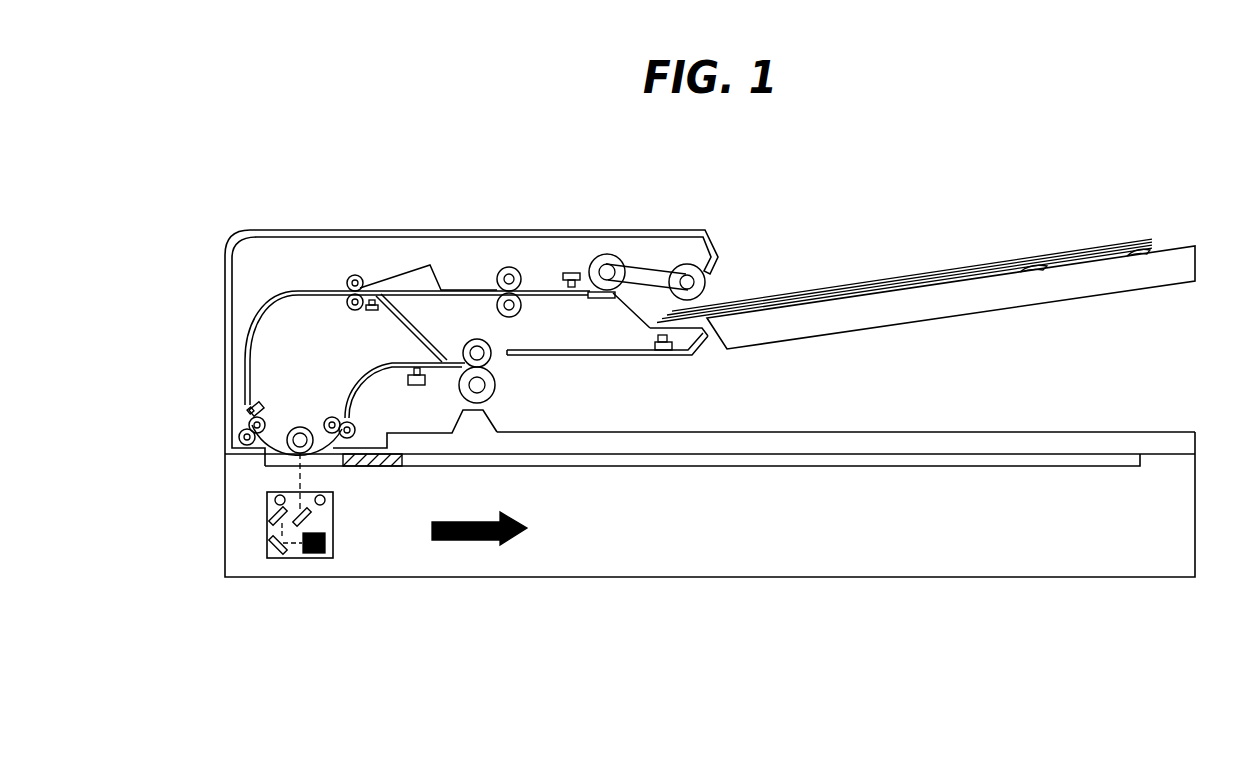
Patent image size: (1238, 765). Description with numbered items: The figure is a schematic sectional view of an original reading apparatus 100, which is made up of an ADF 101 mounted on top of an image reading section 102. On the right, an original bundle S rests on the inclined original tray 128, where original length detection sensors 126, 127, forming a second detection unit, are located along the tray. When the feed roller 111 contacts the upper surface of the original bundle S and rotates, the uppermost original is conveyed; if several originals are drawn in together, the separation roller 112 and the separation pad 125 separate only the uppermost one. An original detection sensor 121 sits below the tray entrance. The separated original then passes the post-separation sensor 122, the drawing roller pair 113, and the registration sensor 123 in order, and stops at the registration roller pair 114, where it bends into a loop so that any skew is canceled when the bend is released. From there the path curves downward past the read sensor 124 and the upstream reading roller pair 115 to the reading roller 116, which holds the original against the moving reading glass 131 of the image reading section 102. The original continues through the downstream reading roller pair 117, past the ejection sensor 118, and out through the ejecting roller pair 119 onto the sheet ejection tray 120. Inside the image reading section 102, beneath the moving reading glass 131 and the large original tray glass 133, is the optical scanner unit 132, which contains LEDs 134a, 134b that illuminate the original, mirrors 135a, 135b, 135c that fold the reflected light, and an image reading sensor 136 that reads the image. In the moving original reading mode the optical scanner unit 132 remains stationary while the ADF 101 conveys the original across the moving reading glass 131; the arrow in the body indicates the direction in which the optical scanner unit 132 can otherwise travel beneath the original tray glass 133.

The original reading apparatus 100 is at (1112, 689).
The ADF 101 is at (241, 233).
The image reading section 102 is at (1118, 578).
The feed roller 111 is at (706, 287).
The separation roller 112 is at (609, 254).
The drawing roller pair 113 is at (497, 272).
The registration roller pair 114 is at (346, 282).
The upstream reading roller pair 115 is at (240, 434).
The reading roller 116 is at (298, 427).
The downstream reading roller pair 117 is at (334, 417).
The ejection sensor 118 is at (415, 386).
The ejecting roller pair 119 is at (470, 341).
The sheet ejection tray 120 is at (715, 431).
The original detection sensor 121 is at (661, 351).
The post-separation sensor 122 is at (565, 274).
The registration sensor 123 is at (370, 311).
The read sensor 124 is at (264, 400).
The separation pad 125 is at (600, 299).
The original length detection sensor 126 is at (1033, 263).
The original length detection sensor 127 is at (1130, 248).
The original tray 128 is at (1177, 248).
The moving reading glass 131 is at (287, 463).
The optical scanner unit 132 is at (305, 558).
The original tray glass 133 is at (675, 467).
The LED 134a is at (326, 500).
The LED 134b is at (275, 499).
The mirror 135a is at (312, 517).
The mirror 135b is at (270, 518).
The mirror 135c is at (271, 553).
The image reading sensor 136 is at (326, 546).
The original bundle S is at (930, 263).